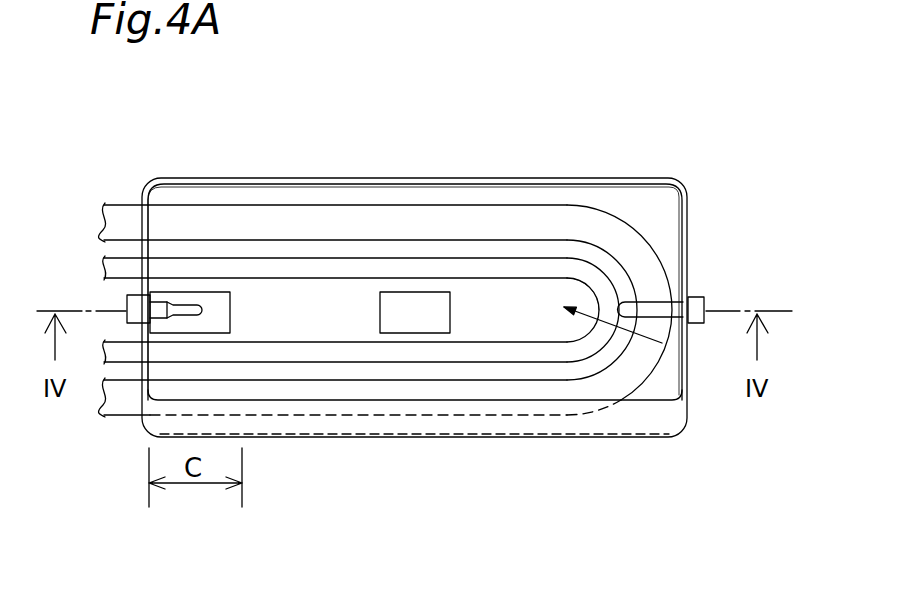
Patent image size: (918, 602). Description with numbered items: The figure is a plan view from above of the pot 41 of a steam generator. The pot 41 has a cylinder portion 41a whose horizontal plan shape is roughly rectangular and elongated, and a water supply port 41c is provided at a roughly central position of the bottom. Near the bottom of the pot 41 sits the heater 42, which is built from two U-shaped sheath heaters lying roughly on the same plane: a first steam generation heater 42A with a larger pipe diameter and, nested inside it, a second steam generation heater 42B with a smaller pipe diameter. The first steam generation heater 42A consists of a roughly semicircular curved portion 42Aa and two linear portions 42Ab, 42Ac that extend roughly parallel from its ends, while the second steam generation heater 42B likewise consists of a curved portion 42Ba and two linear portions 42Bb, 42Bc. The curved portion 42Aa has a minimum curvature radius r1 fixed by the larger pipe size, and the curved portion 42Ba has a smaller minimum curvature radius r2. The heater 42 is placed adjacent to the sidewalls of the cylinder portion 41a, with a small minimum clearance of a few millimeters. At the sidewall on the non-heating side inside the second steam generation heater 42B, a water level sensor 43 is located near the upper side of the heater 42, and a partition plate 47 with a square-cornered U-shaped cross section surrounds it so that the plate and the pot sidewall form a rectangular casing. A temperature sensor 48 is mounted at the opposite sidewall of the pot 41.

The pot 41 is at (598, 157).
The cylinder portion 41a is at (562, 438).
The water supply port 41c is at (417, 312).
The heater 42 is at (458, 302).
The first steam generation heater 42A is at (458, 318).
The second steam generation heater 42B is at (412, 320).
The curved portion 42Aa is at (645, 283).
The linear portion 42Ab is at (500, 222).
The linear portion 42Ac is at (417, 407).
The curved portion 42Ba is at (597, 287).
The linear portion 42Bb is at (245, 257).
The linear portion 42Bc is at (360, 353).
The water level sensor 43 is at (187, 309).
The partition plate 47 is at (232, 312).
The temperature sensor 48 is at (650, 307).
The minimum curvature radius r1 is at (637, 338).
The minimum curvature radius r2 is at (563, 314).